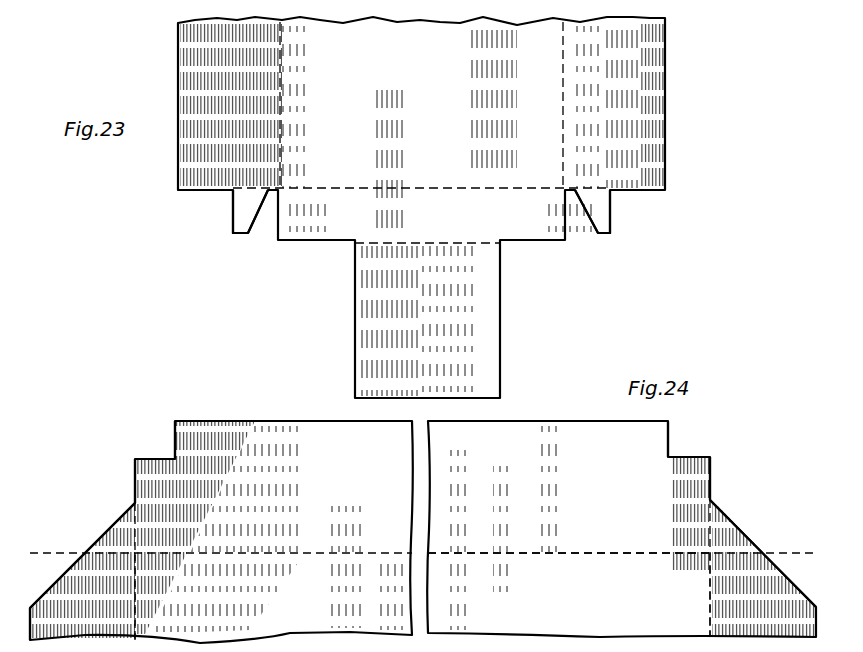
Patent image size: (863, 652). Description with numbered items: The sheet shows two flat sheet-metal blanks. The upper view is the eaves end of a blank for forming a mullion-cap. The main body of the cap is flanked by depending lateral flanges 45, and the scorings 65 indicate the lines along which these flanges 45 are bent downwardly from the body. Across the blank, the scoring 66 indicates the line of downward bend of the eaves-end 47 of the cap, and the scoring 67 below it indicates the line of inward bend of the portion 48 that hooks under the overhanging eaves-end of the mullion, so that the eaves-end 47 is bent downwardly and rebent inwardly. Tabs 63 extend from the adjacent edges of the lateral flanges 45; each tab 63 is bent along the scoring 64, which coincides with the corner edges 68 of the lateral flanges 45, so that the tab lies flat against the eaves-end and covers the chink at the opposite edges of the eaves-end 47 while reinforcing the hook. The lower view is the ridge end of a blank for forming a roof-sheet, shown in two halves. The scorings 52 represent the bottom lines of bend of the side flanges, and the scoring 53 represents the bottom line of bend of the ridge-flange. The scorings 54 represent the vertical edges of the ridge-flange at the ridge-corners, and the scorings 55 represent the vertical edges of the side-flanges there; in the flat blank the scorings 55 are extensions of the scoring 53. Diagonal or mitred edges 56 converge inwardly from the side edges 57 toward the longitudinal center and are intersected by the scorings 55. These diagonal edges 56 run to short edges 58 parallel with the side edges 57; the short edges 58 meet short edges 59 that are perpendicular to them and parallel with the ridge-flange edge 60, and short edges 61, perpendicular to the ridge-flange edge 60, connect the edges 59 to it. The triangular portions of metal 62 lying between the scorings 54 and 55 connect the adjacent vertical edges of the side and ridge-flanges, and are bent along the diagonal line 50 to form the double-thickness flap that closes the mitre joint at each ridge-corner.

In FIG. 23, the lateral flange 45 is at (205, 75).
In FIG. 23, the scoring 65 is at (283, 78).
In FIG. 23, the scoring 66 is at (415, 186).
In FIG. 23, the eaves-end 47 is at (425, 207).
In FIG. 23, the scoring 67 is at (426, 248).
In FIG. 23, the hooking portion 48 is at (478, 330).
In FIG. 23, the corner edge 68 is at (196, 195).
In FIG. 23, the scoring 64 is at (246, 198).
In FIG. 23, the tab 63 is at (250, 225).
In FIG. 24, the ridge-flange edge 60 is at (310, 419).
In FIG. 24, the short edge 61 is at (173, 433).
In FIG. 24, the short edge 59 is at (158, 457).
In FIG. 24, the short edge 58 is at (133, 477).
In FIG. 24, the diagonal bend line 50 is at (713, 472).
In FIG. 24, the triangular portion 62 is at (128, 523).
In FIG. 24, the scoring 55 is at (108, 552).
In FIG. 24, the diagonal edge 56 is at (62, 573).
In FIG. 24, the side edge 57 is at (25, 613).
In FIG. 24, the scoring 54 is at (138, 532).
In FIG. 24, the scoring 52 is at (138, 627).
In FIG. 24, the scoring 53 is at (565, 553).